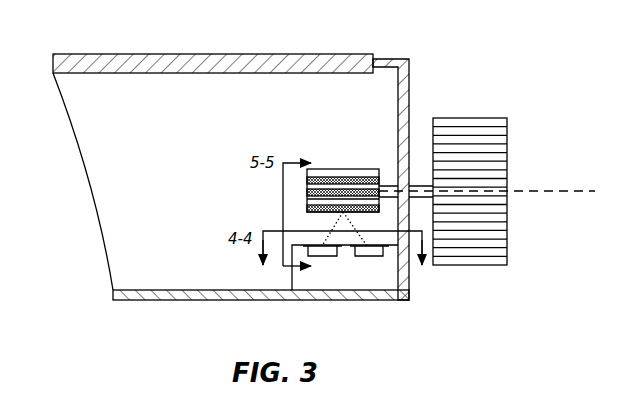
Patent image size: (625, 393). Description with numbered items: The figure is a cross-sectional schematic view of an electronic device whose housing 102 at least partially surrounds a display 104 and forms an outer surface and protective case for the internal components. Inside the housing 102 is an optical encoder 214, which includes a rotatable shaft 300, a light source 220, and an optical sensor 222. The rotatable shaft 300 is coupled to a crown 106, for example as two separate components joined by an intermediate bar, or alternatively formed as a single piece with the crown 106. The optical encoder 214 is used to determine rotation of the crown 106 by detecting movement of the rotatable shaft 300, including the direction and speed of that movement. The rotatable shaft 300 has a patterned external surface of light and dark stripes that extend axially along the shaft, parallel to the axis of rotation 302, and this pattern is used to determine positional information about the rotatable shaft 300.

The housing 102 is at (397, 59).
The display 104 is at (189, 54).
The crown 106 is at (507, 118).
The optical encoder 214 is at (258, 203).
The light source 220 is at (366, 258).
The optical sensor 222 is at (320, 258).
The rotatable shaft 300 is at (371, 169).
The axis of rotation 302 is at (553, 191).